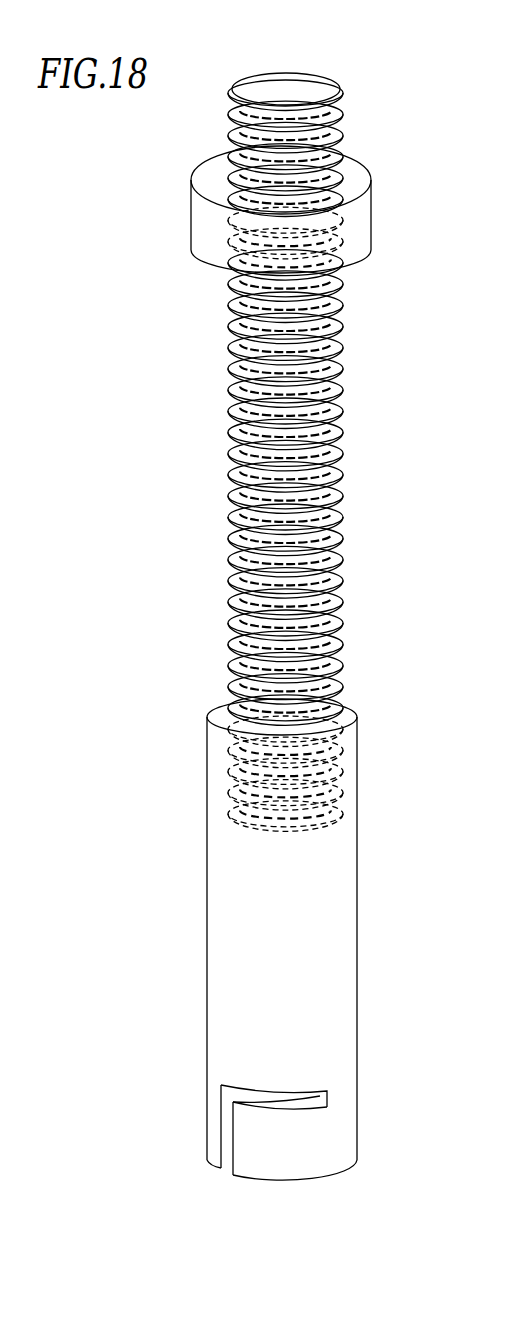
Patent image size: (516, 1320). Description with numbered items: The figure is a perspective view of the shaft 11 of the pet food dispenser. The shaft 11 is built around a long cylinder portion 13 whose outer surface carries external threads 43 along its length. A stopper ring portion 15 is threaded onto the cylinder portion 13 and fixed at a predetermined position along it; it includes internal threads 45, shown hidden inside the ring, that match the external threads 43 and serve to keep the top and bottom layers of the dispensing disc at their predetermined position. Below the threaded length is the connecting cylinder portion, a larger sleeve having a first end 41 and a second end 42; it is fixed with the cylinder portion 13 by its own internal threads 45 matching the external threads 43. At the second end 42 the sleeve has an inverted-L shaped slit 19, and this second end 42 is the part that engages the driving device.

The shaft 11 is at (348, 70).
The first end 41 is at (264, 88).
The stopper ring portion 15 is at (205, 229).
The internal threads 45 is at (340, 229).
The cylinder portion 13 is at (230, 425).
The external threads 43 is at (242, 472).
The second end 42 is at (208, 716).
The inverted-L shaped slit 19 is at (224, 1120).